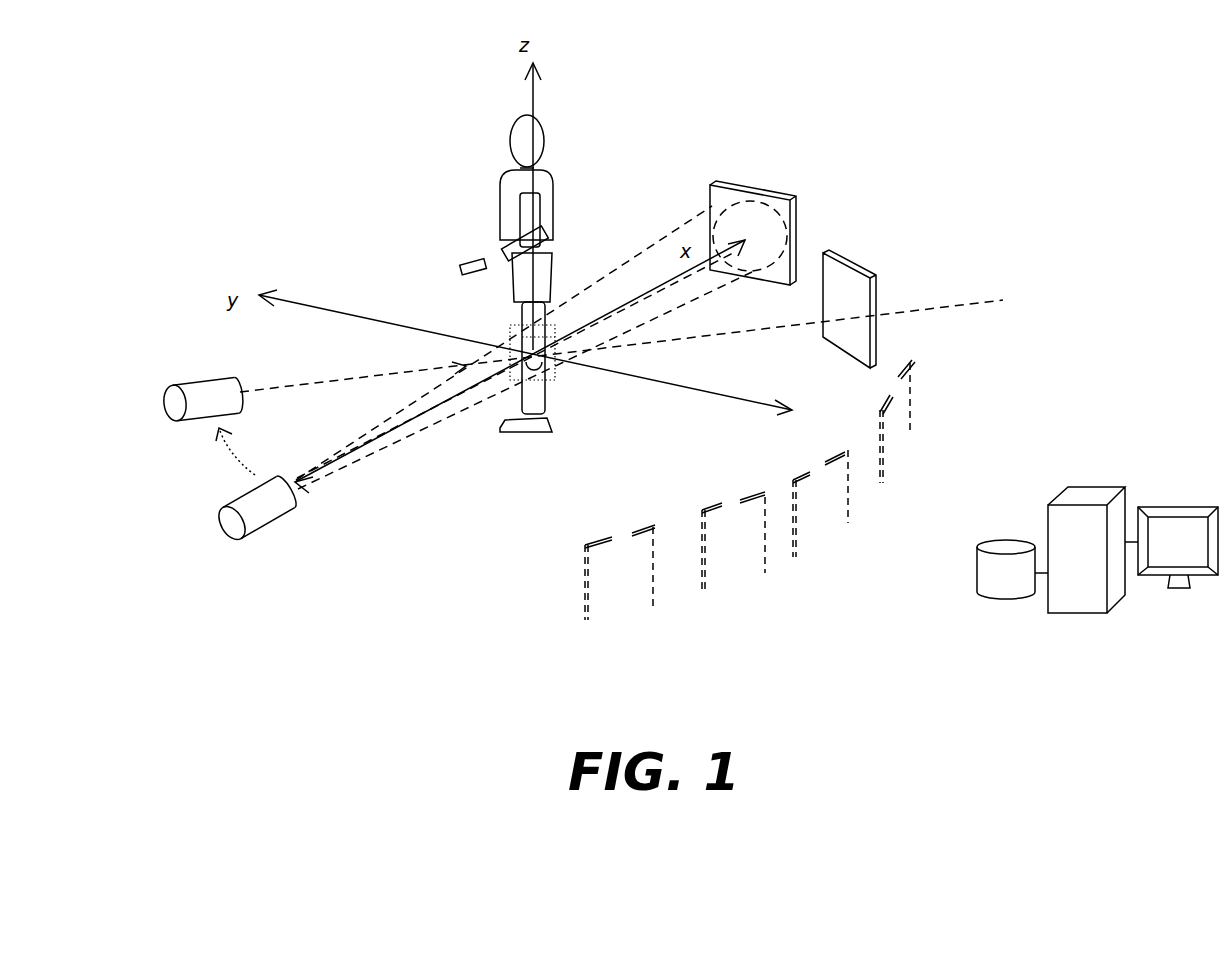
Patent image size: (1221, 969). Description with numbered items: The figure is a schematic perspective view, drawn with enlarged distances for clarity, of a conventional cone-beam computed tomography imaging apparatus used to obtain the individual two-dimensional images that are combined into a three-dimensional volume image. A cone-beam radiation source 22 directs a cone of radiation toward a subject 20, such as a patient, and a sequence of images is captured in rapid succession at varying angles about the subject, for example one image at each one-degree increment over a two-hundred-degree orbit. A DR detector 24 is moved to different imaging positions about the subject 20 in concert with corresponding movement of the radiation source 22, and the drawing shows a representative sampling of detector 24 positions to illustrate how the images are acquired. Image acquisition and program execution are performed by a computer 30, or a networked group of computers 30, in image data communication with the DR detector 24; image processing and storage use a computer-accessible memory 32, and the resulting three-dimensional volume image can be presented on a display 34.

The subject 20 is at (552, 372).
The cone-beam radiation source 22 is at (257, 533).
The DR detector 24 is at (765, 192).
The computer 30 is at (1090, 580).
The computer-accessible memory 32 is at (1016, 585).
The display 34 is at (1186, 552).